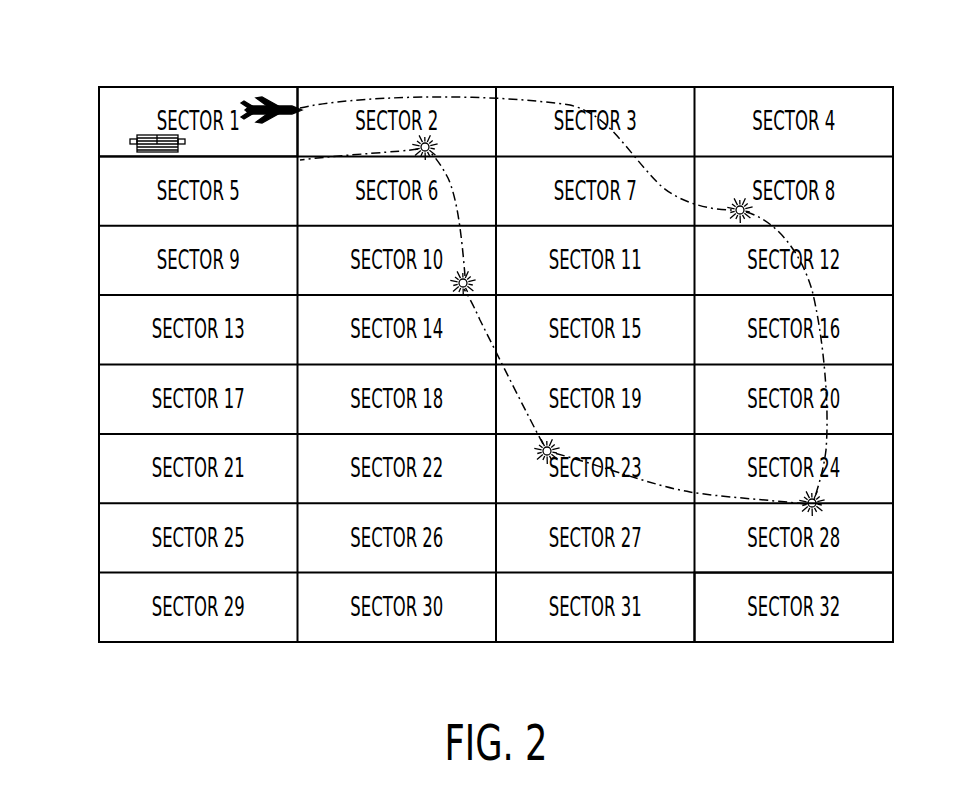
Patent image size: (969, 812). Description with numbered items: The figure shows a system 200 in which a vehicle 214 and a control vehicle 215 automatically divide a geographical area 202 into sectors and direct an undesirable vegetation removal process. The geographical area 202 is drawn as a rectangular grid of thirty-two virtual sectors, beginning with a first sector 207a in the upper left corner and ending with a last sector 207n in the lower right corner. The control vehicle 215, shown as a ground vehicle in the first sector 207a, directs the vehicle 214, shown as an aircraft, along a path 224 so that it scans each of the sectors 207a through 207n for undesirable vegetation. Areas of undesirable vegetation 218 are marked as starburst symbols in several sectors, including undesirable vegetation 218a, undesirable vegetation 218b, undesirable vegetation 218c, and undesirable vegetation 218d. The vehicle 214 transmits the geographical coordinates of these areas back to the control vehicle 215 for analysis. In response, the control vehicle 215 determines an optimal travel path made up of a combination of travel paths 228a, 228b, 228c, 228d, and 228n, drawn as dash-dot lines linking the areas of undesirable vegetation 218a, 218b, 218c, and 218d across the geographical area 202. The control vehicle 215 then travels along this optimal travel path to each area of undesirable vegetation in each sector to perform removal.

The system 200 is at (94, 81).
The geographical area 202 is at (655, 87).
The sector 207a is at (195, 92).
The sector 207n is at (798, 643).
The vehicle 214 is at (265, 100).
The control vehicle 215 is at (143, 134).
The undesirable vegetation 218 is at (738, 200).
The undesirable vegetation 218a is at (442, 148).
The undesirable vegetation 218b is at (478, 288).
The undesirable vegetation 218c is at (534, 458).
The undesirable vegetation 218d is at (828, 498).
The path 224 is at (457, 96).
The travel path 228a is at (334, 161).
The travel path 228b is at (470, 219).
The travel path 228c is at (517, 403).
The travel path 228d is at (684, 498).
The travel path 228n is at (824, 297).